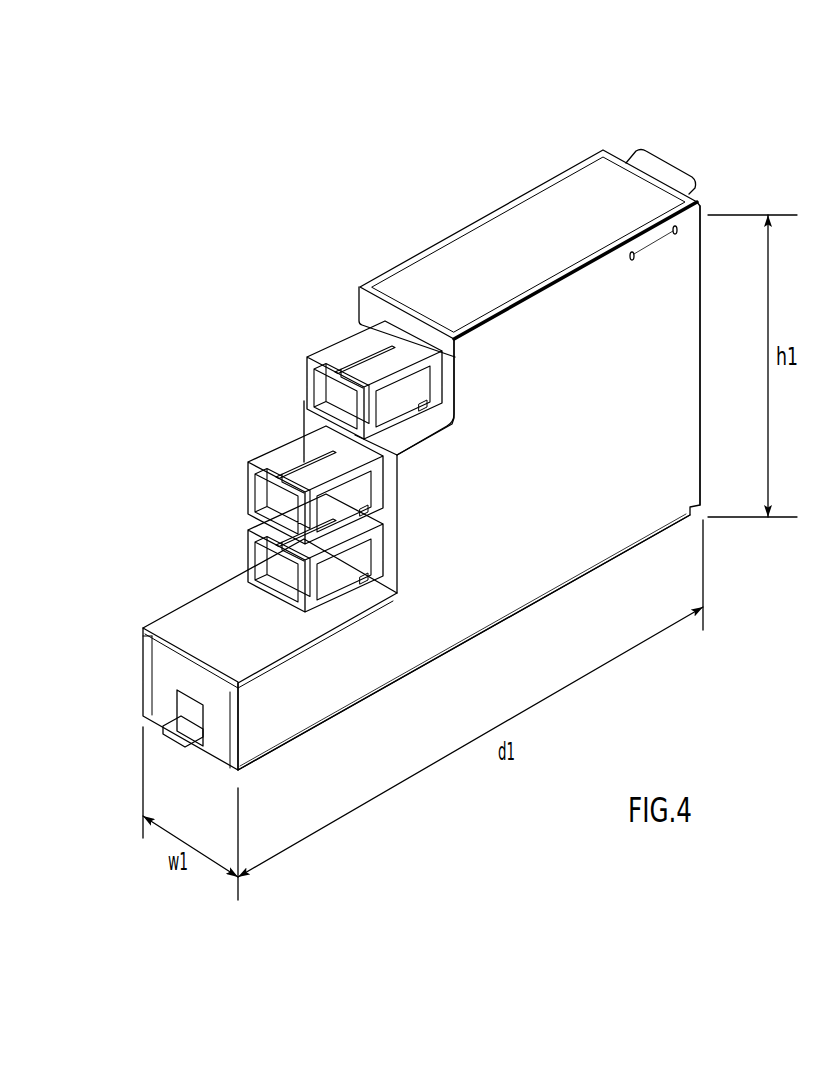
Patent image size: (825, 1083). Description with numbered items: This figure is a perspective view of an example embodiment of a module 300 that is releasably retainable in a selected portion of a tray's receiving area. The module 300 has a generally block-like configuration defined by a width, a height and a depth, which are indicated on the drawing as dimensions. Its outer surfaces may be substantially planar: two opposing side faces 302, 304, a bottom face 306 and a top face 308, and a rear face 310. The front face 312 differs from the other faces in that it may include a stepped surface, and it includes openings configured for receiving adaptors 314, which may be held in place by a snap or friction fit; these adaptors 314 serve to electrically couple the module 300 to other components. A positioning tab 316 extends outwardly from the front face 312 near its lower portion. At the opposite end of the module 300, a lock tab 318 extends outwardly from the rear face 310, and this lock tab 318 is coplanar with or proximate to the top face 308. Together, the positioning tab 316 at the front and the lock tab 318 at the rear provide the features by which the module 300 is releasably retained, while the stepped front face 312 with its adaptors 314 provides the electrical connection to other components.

The module 300 is at (421, 423).
The side face 302 is at (589, 441).
The side face 304 is at (528, 289).
The bottom face 306 is at (505, 628).
The top face 308 is at (528, 230).
The rear face 310 is at (705, 318).
The front face 312 is at (228, 585).
The adaptors 314 is at (273, 460).
The positioning tab 316 is at (173, 728).
The lock tab 318 is at (642, 163).